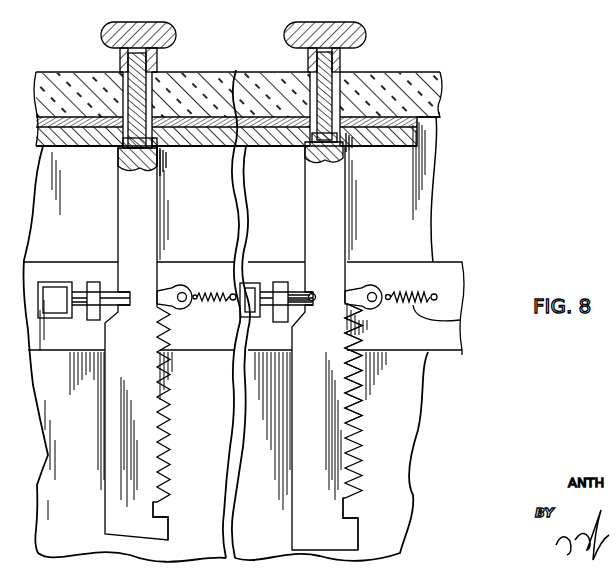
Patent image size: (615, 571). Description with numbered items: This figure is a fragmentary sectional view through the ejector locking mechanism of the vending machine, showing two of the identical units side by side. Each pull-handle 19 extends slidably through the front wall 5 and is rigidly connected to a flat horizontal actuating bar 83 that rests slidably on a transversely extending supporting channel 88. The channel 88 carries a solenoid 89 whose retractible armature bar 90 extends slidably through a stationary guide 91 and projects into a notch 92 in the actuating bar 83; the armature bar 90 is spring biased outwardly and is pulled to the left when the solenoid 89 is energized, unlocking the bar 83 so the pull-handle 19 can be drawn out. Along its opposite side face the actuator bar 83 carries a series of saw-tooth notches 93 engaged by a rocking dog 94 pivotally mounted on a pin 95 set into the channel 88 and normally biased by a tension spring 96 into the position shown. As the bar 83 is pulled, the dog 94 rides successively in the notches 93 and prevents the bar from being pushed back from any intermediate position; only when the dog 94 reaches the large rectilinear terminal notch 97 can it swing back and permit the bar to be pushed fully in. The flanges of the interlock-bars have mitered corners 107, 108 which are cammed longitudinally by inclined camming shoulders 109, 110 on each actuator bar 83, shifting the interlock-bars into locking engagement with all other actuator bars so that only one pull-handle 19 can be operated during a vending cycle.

The front wall 5 is at (405, 88).
The pull-handle 19 is at (165, 35).
The actuating bar 83 is at (152, 425).
The supporting channel 88 is at (440, 297).
The solenoid 89 is at (55, 285).
The armature bar 90 is at (78, 292).
The stationary guide 91 is at (317, 293).
The notch 92 is at (315, 298).
The saw-tooth notches 93 is at (353, 408).
The rocking dog 94 is at (375, 294).
The pin 95 is at (390, 293).
The tension spring 96 is at (460, 320).
The terminal notch 97 is at (167, 515).
The mitered corner 107 is at (120, 148).
The mitered corner 108 is at (163, 157).
The camming shoulder 109 is at (120, 167).
The camming shoulder 110 is at (163, 173).